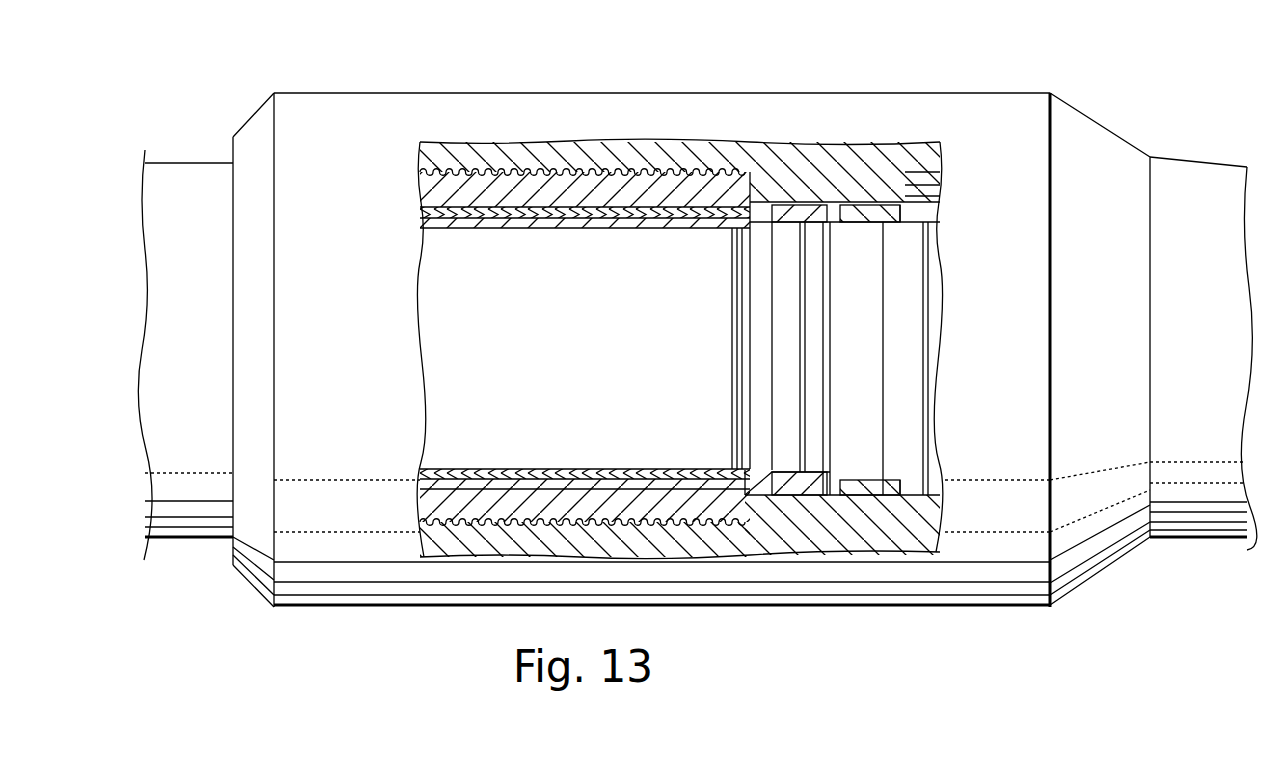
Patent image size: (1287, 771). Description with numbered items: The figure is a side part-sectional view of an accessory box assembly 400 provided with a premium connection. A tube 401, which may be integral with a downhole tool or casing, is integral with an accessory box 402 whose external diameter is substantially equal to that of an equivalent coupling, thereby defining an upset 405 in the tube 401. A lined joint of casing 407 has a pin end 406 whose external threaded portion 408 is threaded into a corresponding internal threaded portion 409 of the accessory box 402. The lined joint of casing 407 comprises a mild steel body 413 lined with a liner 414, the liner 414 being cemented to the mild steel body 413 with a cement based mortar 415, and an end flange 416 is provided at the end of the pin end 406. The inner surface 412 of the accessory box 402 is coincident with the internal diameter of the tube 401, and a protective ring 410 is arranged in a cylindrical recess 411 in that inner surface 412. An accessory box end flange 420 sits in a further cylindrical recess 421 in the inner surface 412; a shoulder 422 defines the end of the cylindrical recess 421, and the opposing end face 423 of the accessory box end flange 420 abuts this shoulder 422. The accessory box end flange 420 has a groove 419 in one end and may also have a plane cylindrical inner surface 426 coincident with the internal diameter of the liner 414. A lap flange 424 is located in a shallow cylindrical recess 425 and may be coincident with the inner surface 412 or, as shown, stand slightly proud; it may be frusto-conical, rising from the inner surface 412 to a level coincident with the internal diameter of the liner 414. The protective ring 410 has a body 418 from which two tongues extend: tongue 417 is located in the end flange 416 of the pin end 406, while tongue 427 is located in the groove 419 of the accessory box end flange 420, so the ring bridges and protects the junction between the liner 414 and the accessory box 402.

The accessory box assembly 400 is at (731, 78).
The tube 401 is at (1198, 157).
The accessory box 402 is at (958, 93).
The upset 405 is at (945, 607).
The pin end 406 is at (495, 190).
The lined joint of casing 407 is at (192, 163).
The external threaded portion 408 is at (527, 195).
The internal threaded portion 409 is at (518, 172).
The protective ring 410 is at (778, 250).
The cylindrical recess 411 is at (782, 143).
The inner surface 412 is at (932, 220).
The mild steel body 413 is at (185, 490).
The liner 414 is at (460, 233).
The cement based mortar 415 is at (598, 210).
The end flange 416 is at (712, 240).
The tongue 417 is at (745, 190).
The body 418 is at (783, 250).
The groove 419 is at (843, 222).
The accessory box end flange 420 is at (860, 185).
The cylindrical recess 421 is at (910, 145).
The shoulder 422 is at (942, 186).
The opposing end face 423 is at (940, 178).
The lap flange 424 is at (905, 403).
The shallow cylindrical recess 425 is at (942, 196).
The plane cylindrical inner surface 426 is at (853, 222).
The tongue 427 is at (829, 143).